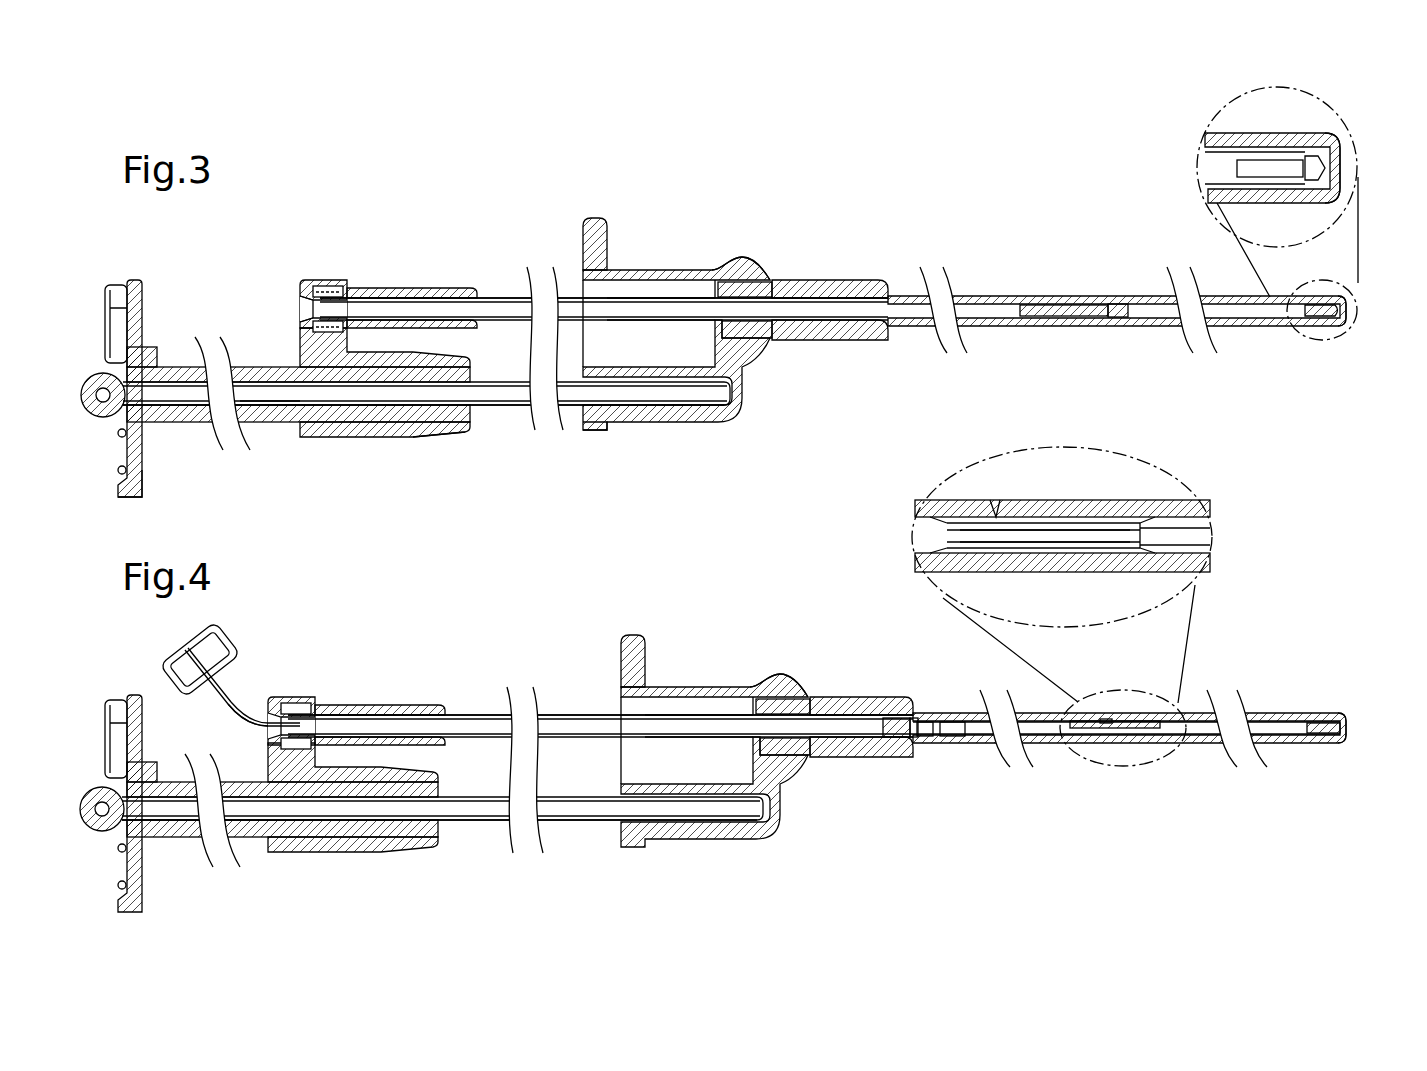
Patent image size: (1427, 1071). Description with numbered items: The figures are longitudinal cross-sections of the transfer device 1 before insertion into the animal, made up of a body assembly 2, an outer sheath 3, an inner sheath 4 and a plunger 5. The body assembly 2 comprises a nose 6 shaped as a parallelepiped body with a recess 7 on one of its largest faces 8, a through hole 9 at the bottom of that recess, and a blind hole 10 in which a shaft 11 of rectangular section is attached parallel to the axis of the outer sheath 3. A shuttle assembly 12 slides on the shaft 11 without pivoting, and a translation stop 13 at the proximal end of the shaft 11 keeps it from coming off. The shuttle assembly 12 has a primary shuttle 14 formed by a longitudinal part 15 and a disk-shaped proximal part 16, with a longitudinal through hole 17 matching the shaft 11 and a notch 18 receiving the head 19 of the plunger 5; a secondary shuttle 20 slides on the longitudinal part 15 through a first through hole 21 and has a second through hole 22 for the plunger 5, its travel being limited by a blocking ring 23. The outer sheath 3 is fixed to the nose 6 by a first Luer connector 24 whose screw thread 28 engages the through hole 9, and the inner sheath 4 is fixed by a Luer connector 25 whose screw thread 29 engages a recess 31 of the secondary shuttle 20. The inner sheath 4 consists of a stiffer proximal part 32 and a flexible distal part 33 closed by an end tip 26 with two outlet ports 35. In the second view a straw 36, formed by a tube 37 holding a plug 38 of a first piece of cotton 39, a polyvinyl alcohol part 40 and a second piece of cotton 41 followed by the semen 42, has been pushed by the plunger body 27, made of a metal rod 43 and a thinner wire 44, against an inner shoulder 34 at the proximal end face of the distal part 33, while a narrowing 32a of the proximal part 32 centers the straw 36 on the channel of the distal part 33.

In FIG. 3, the transfer device 1 is at (722, 168).
In FIG. 4, the transfer device 1 is at (500, 645).
In FIG. 3, the body assembly 2 is at (596, 448).
In FIG. 4, the body assembly 2 is at (635, 858).
In FIG. 3, the outer sheath 3 is at (1010, 296).
In FIG. 4, the outer sheath 3 is at (1167, 712).
In FIG. 3, the inner sheath 4 is at (565, 290).
In FIG. 4, the inner sheath 4 is at (598, 706).
In FIG. 4, the plunger 5 is at (152, 650).
In FIG. 3, the nose 6 is at (757, 258).
In FIG. 4, the nose 6 is at (800, 685).
In FIG. 3, the recess 7 is at (650, 289).
In FIG. 3, the face 8 is at (584, 431).
In FIG. 3, the through hole 9 is at (714, 284).
In FIG. 3, the blind hole 10 is at (637, 424).
In FIG. 3, the shaft 11 is at (493, 407).
In FIG. 4, the shaft 11 is at (592, 822).
In FIG. 3, the shuttle assembly 12 is at (357, 446).
In FIG. 4, the shuttle assembly 12 is at (330, 858).
In FIG. 3, the translation stop 13 is at (93, 383).
In FIG. 3, the primary shuttle 14 is at (135, 280).
In FIG. 4, the primary shuttle 14 is at (147, 882).
In FIG. 3, the longitudinal part 15 is at (270, 404).
In FIG. 3, the disk-shaped proximal part 16 is at (141, 466).
In FIG. 3, the longitudinal through hole 17 is at (267, 404).
In FIG. 3, the notch 18 is at (143, 314).
In FIG. 4, the notch 18 is at (133, 740).
In FIG. 4, the head 19 is at (153, 675).
In FIG. 3, the secondary shuttle 20 is at (320, 280).
In FIG. 4, the secondary shuttle 20 is at (292, 697).
In FIG. 3, the first through hole 21 is at (373, 422).
In FIG. 3, the second through hole 22 is at (300, 300).
In FIG. 3, the blocking ring 23 is at (443, 432).
In FIG. 3, the first Luer connector 24 is at (841, 280).
In FIG. 4, the first Luer connector 24 is at (857, 759).
In FIG. 3, the Luer connector 25 is at (424, 288).
In FIG. 4, the Luer connector 25 is at (390, 708).
In FIG. 3, the end tip 26 is at (1352, 306).
In FIG. 4, the end tip 26 is at (1352, 732).
In FIG. 4, the plunger body 27 is at (241, 686).
In FIG. 3, the screw thread 28 is at (758, 282).
In FIG. 3, the screw thread 29 is at (342, 284).
In FIG. 3, the recess 31 is at (337, 344).
In FIG. 3, the proximal part 32 is at (622, 322).
In FIG. 4, the proximal part 32 is at (563, 716).
In FIG. 4, the narrowing 32a is at (1052, 518).
In FIG. 3, the distal part 33 is at (1155, 327).
In FIG. 4, the distal part 33 is at (1200, 745).
In FIG. 4, the inner shoulder 34 is at (1140, 574).
In FIG. 3, the outlet ports 35 is at (1327, 210).
In FIG. 4, the straw 36 is at (1027, 531).
In FIG. 4, the tube 37 is at (947, 552).
In FIG. 4, the plug 38 is at (892, 712).
In FIG. 4, the first piece of cotton 39 is at (895, 715).
In FIG. 4, the polyvinyl alcohol part 40 is at (922, 740).
In FIG. 4, the second piece of cotton 41 is at (945, 740).
In FIG. 4, the semen 42 is at (993, 498).
In FIG. 4, the metal rod 43 is at (227, 668).
In FIG. 4, the wire 44 is at (240, 726).